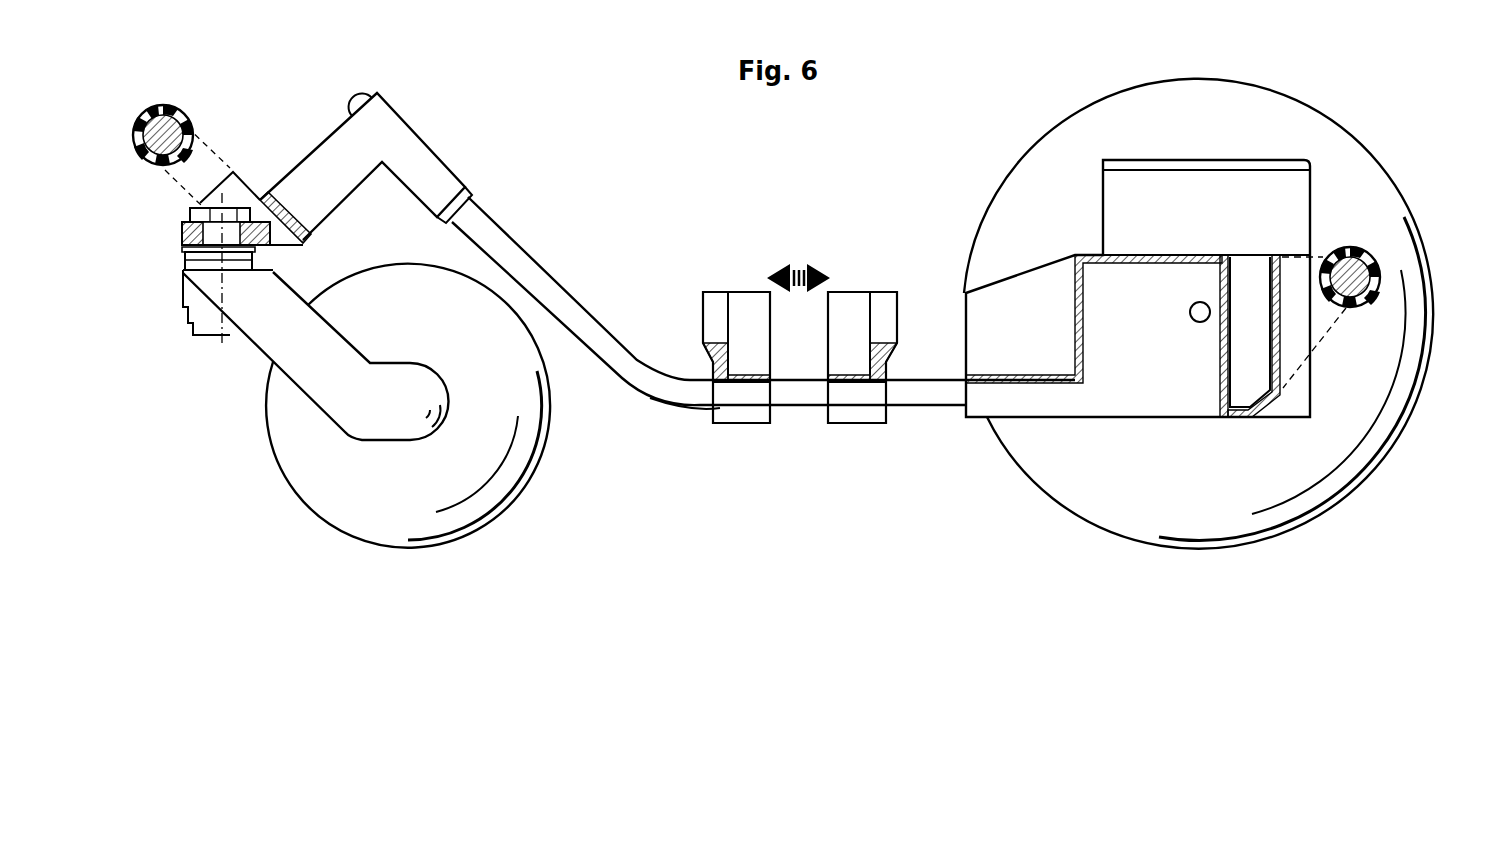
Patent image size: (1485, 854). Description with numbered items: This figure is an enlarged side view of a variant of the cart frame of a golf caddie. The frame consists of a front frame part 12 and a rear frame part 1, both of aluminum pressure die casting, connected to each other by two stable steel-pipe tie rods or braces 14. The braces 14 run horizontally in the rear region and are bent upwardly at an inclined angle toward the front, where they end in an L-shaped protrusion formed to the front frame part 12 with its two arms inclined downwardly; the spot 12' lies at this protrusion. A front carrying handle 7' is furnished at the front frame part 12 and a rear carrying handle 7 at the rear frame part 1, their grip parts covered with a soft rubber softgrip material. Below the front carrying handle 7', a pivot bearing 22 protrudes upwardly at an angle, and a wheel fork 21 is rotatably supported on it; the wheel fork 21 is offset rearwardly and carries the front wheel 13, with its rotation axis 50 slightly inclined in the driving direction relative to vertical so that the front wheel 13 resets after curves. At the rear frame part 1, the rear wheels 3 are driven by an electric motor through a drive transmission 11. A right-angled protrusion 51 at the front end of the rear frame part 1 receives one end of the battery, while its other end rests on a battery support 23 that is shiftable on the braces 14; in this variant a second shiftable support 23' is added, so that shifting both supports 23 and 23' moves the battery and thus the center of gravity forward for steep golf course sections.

The rear frame part 1 is at (980, 420).
The rear wheel 3 is at (1333, 160).
The carrying handle 7 is at (1395, 258).
The carrying handle 7' is at (182, 101).
The drive transmission 11 is at (1290, 216).
The front frame part 12 is at (371, 148).
The pivot stub 12' is at (351, 71).
The front wheel 13 is at (488, 495).
The tie rod or brace 14 is at (510, 262).
The wheel fork 21 is at (277, 347).
The pivot bearing 22 is at (257, 263).
The battery support 23 is at (752, 399).
The second shiftable support 23' is at (862, 388).
The rotation axis 50 is at (217, 358).
The right-angled protrusion 51 is at (1064, 360).